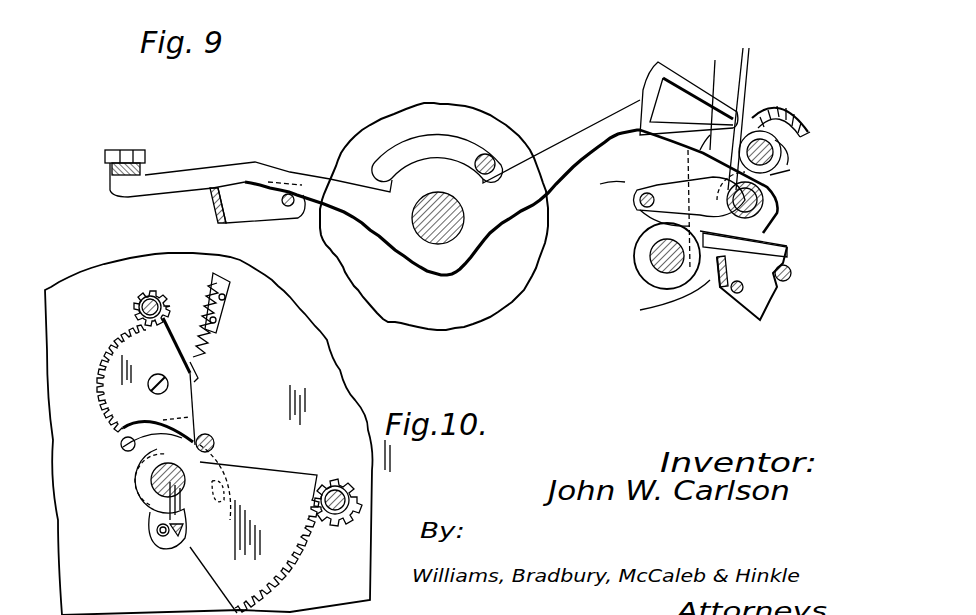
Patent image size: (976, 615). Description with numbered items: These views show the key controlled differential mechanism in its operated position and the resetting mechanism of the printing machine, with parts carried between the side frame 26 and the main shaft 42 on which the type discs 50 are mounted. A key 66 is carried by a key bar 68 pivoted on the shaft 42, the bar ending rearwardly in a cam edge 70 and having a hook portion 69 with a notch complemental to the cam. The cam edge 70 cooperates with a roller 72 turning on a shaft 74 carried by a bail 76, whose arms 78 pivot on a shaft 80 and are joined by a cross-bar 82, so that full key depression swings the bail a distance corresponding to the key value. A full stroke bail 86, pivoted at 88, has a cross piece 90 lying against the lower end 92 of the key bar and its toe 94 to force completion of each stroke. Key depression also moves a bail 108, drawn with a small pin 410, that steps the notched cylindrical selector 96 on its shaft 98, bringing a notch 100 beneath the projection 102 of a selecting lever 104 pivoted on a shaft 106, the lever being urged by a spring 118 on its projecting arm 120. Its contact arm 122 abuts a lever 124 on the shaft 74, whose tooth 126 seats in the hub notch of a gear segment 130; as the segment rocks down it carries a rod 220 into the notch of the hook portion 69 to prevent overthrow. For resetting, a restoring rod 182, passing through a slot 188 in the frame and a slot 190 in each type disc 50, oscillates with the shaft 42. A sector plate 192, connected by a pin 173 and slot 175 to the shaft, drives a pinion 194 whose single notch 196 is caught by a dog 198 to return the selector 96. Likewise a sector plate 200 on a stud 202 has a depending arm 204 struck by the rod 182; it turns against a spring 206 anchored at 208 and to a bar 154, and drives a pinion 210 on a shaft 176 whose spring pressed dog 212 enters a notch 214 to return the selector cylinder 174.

In FIG. 10, the side frame 26 is at (330, 387).
In FIG. 9, the main shaft 42 is at (445, 224).
In FIG. 10, the main shaft 42 is at (160, 492).
In FIG. 9, the type disc 50 is at (400, 318).
In FIG. 9, the key 66 is at (108, 155).
In FIG. 9, the key bar 68 is at (165, 184).
In FIG. 9, the hook portion 69 is at (700, 150).
In FIG. 9, the cam edge 70 is at (762, 138).
In FIG. 9, the roller 72 is at (766, 205).
In FIG. 9, the shaft 74 is at (770, 200).
In FIG. 9, the bail 76 is at (790, 148).
In FIG. 9, the arm 78 is at (700, 148).
In FIG. 9, the shaft 80 is at (795, 110).
In FIG. 9, the cross-bar 82 is at (804, 127).
In FIG. 9, the bail 86 is at (748, 322).
In FIG. 9, the pivot 88 is at (735, 294).
In FIG. 9, the cross piece 90 is at (700, 270).
In FIG. 9, the lower end 92 is at (640, 310).
In FIG. 9, the toe 94 is at (720, 290).
In FIG. 9, the cylindrical selector 96 is at (640, 270).
In FIG. 10, the cylindrical selector 96 is at (325, 505).
In FIG. 9, the shaft 98 is at (650, 253).
In FIG. 9, the notch 100 is at (656, 232).
In FIG. 9, the projection 102 is at (642, 206).
In FIG. 9, the selecting lever 104 is at (690, 190).
In FIG. 9, the shaft 106 is at (600, 184).
In FIG. 9, the bail 108 is at (242, 225).
In FIG. 9, the spring 118 is at (791, 272).
In FIG. 9, the projecting arm 120 is at (789, 250).
In FIG. 9, the contact arm 122 is at (748, 58).
In FIG. 9, the lever 124 is at (760, 233).
In FIG. 9, the tooth 126 is at (792, 170).
In FIG. 9, the gear segment 130 is at (656, 67).
In FIG. 10, the bar 154 is at (233, 290).
In FIG. 10, the pin 173 is at (163, 538).
In FIG. 10, the selector cylinder 174 is at (165, 315).
In FIG. 10, the slot 175 is at (184, 536).
In FIG. 10, the shaft 176 is at (135, 312).
In FIG. 9, the restoring rod 182 is at (492, 158).
In FIG. 10, the restoring rod 182 is at (214, 445).
In FIG. 10, the slot 188 is at (130, 450).
In FIG. 9, the slot 190 is at (432, 138).
In FIG. 10, the sector plate 192 is at (240, 572).
In FIG. 10, the pinion 194 is at (343, 521).
In FIG. 10, the notch 196 is at (352, 490).
In FIG. 10, the dog 198 is at (334, 486).
In FIG. 10, the sector plate 200 is at (112, 378).
In FIG. 10, the stud 202 is at (166, 391).
In FIG. 10, the depending arm 204 is at (193, 442).
In FIG. 10, the spring 206 is at (205, 338).
In FIG. 10, the spring attachment point 208 is at (198, 375).
In FIG. 10, the pinion 210 is at (130, 301).
In FIG. 10, the spring pressed dog 212 is at (150, 292).
In FIG. 10, the notch 214 is at (140, 290).
In FIG. 9, the rod 220 is at (715, 62).
In FIG. 9, the pin 410 is at (289, 207).